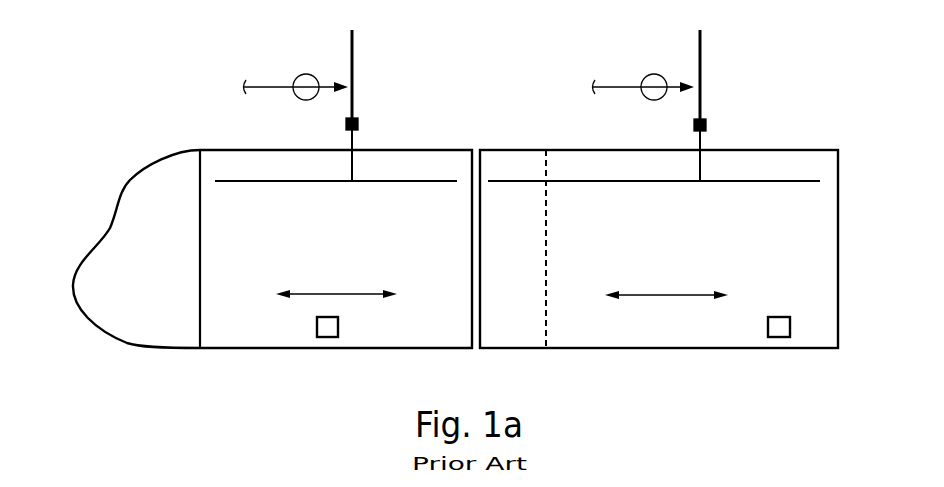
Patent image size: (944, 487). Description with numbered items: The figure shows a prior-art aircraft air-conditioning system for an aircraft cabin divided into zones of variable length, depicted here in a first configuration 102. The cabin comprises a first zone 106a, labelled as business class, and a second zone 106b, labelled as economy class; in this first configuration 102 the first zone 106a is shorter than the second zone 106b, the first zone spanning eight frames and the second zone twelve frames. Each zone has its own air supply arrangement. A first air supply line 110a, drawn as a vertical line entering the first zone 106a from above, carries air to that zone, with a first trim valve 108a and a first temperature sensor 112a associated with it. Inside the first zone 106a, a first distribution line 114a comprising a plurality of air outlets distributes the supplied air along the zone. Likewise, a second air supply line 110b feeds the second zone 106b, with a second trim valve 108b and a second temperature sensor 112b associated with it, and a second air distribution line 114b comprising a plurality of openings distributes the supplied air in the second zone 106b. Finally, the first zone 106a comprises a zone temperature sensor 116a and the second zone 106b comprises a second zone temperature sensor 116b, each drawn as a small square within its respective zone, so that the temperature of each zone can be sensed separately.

The first configuration 102 is at (108, 152).
The first zone 106a is at (238, 340).
The second zone 106b is at (585, 340).
The first trim valve 108a is at (306, 74).
The second trim valve 108b is at (654, 74).
The first air supply line 110a is at (355, 43).
The second air supply line 110b is at (703, 43).
The first temperature sensor 112a is at (359, 124).
The second temperature sensor 112b is at (707, 125).
The first distribution line 114a is at (242, 181).
The second air distribution line 114b is at (588, 181).
The zone temperature sensor 116a is at (340, 326).
The second zone temperature sensor 116b is at (780, 316).